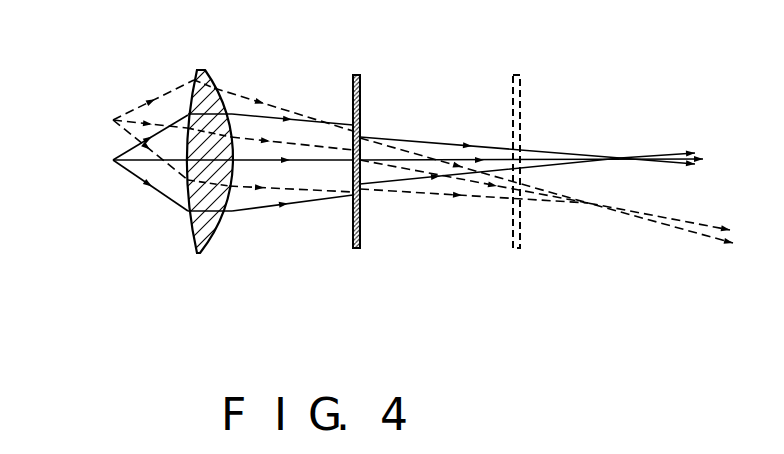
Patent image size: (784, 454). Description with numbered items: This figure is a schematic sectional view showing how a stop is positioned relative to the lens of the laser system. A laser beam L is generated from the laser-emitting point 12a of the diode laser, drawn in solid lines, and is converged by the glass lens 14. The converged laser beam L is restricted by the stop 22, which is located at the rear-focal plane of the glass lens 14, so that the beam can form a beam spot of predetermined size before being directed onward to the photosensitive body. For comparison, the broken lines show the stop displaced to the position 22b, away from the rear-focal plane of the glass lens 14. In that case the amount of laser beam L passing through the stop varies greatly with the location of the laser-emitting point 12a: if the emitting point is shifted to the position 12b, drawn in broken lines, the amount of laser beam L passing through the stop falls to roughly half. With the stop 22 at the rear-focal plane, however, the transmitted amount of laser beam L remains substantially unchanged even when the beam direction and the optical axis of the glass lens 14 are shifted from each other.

The laser-emitting point 12a is at (113, 160).
The shifted position of the laser-emitting point 12b is at (112, 120).
The glass lens 14 is at (200, 255).
The stop 22 is at (355, 75).
The position of the stop away from the rear-focal plane 22b is at (517, 75).
The laser beam L is at (305, 148).